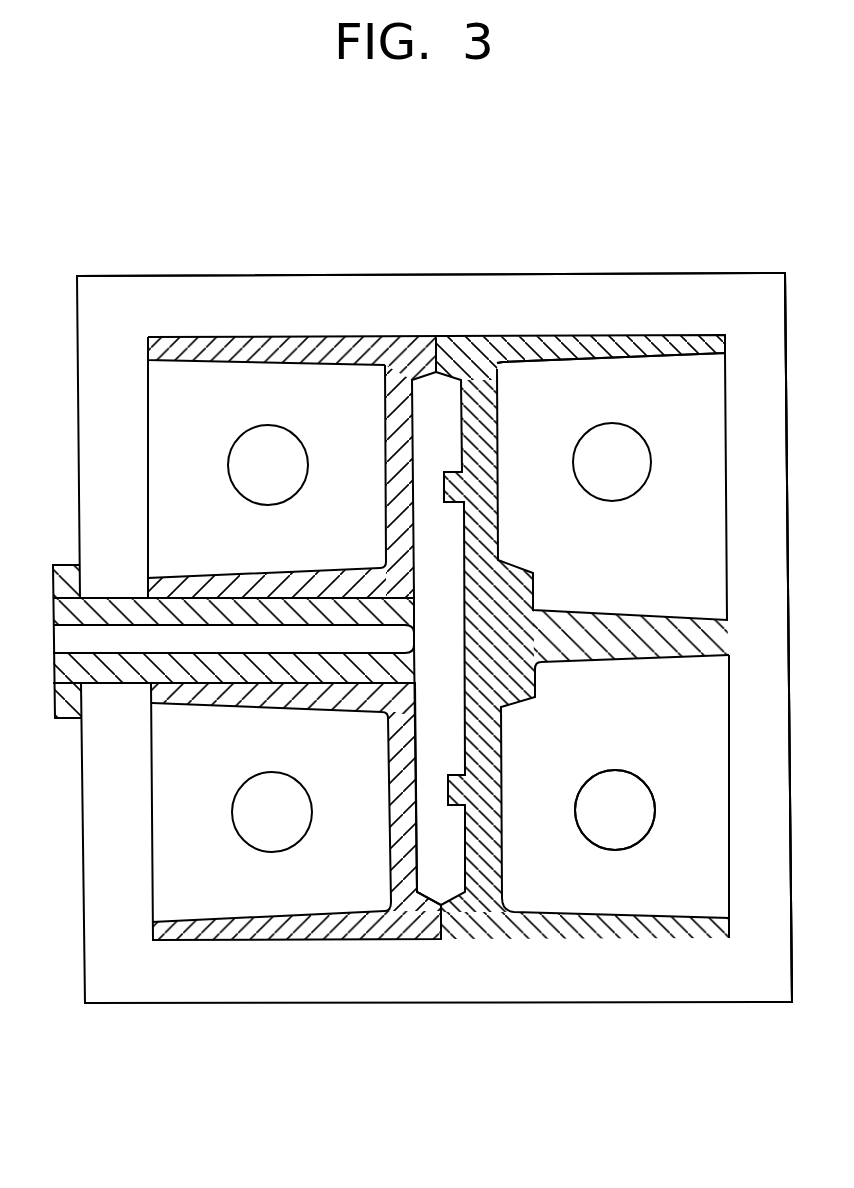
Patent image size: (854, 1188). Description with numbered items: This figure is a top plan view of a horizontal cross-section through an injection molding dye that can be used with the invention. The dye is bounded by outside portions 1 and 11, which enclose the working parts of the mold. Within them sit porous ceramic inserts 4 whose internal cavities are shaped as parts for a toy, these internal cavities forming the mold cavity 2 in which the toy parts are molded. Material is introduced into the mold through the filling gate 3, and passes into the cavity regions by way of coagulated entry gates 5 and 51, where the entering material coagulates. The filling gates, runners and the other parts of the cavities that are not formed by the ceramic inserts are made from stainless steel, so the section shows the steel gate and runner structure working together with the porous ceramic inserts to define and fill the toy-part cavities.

The outside portion 1 is at (99, 311).
The outside portion 11 is at (717, 292).
The mold cavity 2 is at (460, 670).
The filling gate 3 is at (258, 445).
The porous ceramic insert 4 is at (468, 357).
The coagulated entry gate 5 is at (260, 825).
The coagulated entry gate 51 is at (620, 795).